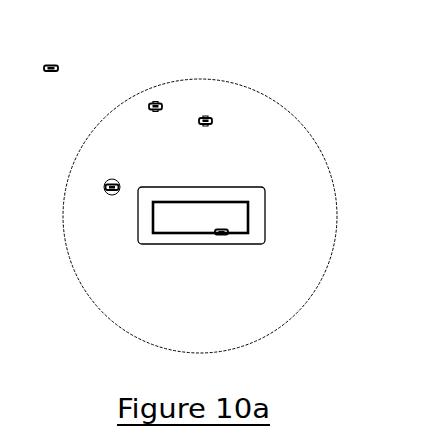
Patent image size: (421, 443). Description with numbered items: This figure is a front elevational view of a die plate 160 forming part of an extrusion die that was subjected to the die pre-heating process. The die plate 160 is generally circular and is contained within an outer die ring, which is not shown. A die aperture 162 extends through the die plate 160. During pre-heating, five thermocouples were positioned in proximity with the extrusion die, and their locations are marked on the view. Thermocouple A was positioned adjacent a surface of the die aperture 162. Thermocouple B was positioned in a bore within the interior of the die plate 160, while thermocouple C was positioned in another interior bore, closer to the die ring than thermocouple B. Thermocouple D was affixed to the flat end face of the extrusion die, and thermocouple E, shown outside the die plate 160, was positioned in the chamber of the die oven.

The die plate 160 is at (312, 60).
The die aperture 162 is at (233, 215).
The thermocouple A is at (222, 235).
The thermocouple B is at (202, 134).
The thermocouple C is at (153, 126).
The thermocouple D is at (109, 204).
The thermocouple E is at (40, 90).